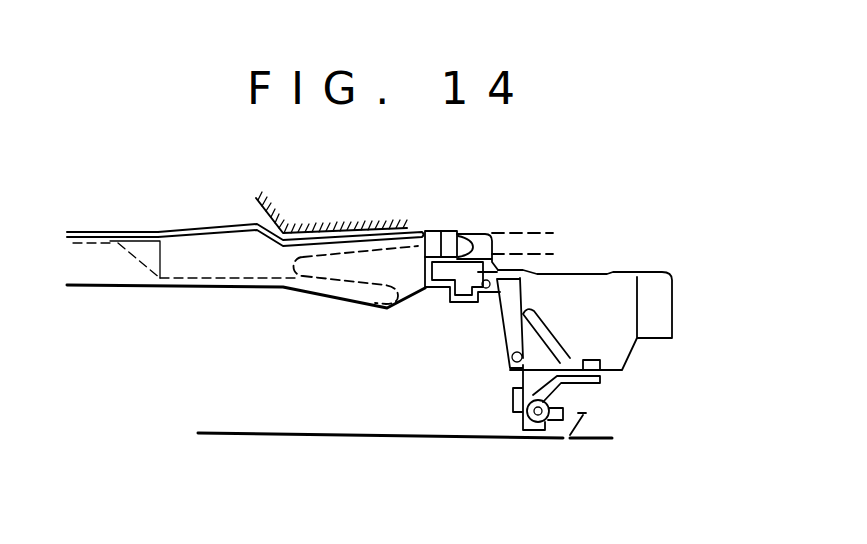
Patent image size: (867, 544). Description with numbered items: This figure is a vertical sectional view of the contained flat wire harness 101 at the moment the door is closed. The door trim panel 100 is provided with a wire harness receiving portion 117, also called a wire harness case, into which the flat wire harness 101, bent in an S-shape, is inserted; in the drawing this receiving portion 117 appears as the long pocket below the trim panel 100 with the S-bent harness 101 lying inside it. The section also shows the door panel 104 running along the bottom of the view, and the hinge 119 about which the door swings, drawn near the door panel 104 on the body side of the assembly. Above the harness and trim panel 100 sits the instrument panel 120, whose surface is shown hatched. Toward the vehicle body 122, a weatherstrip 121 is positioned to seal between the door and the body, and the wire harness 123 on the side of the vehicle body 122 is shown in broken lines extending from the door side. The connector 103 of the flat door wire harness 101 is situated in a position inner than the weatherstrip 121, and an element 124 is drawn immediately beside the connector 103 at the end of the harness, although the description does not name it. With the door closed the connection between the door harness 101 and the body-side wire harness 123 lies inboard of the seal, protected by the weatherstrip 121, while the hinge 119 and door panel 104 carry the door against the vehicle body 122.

The door trim panel 100 is at (178, 225).
The instrument panel 120 is at (260, 206).
The flat wire harness 101 is at (349, 255).
The connector 103 is at (435, 230).
The engaging member 124 is at (461, 232).
The wire harness 123 is at (532, 230).
The vehicle body 122 is at (620, 272).
The wire harness receiving portion 117 is at (257, 263).
The weatherstrip 121 is at (483, 286).
The hinge 119 is at (573, 398).
The door panel 104 is at (420, 437).